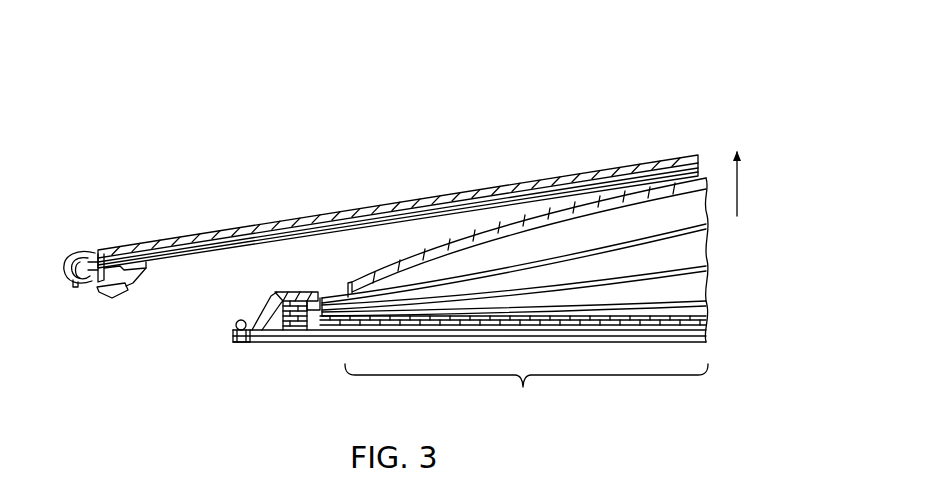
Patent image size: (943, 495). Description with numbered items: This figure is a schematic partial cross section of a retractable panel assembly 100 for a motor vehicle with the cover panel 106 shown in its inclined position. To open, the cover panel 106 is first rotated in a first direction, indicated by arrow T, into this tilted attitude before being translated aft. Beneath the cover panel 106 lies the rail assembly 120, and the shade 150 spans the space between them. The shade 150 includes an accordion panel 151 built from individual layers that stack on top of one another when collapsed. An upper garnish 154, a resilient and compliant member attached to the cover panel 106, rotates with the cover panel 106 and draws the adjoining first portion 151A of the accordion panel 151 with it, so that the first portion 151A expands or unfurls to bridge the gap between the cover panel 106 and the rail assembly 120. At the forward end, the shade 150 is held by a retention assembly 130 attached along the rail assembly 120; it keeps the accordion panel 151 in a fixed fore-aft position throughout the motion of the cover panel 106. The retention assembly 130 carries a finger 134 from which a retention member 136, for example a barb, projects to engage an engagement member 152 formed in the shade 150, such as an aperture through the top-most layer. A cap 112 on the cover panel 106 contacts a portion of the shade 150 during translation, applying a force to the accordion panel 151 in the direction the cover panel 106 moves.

The retractable panel assembly 100 is at (546, 118).
The cover panel 106 is at (424, 182).
The cap 112 is at (113, 299).
The rail assembly 120 is at (711, 338).
The retention assembly 130 is at (252, 308).
The finger 134 is at (293, 294).
The retention member 136 is at (322, 302).
The shade 150 is at (561, 260).
The accordion panel 151 is at (711, 250).
The first portion of the accordion panel 151A is at (526, 390).
The engagement member 152 is at (309, 320).
The upper garnish 154 is at (416, 260).
The arrow T is at (738, 182).